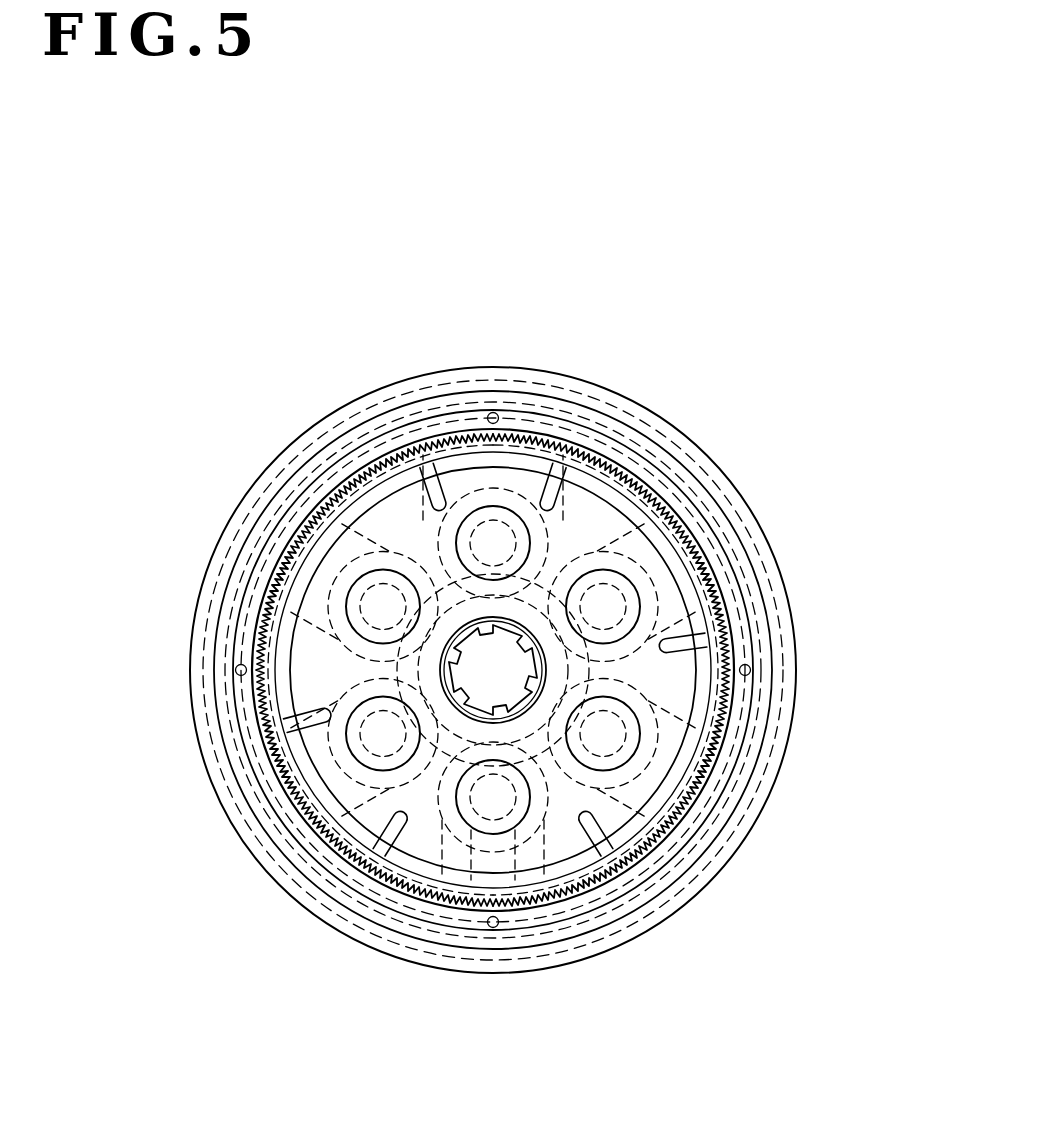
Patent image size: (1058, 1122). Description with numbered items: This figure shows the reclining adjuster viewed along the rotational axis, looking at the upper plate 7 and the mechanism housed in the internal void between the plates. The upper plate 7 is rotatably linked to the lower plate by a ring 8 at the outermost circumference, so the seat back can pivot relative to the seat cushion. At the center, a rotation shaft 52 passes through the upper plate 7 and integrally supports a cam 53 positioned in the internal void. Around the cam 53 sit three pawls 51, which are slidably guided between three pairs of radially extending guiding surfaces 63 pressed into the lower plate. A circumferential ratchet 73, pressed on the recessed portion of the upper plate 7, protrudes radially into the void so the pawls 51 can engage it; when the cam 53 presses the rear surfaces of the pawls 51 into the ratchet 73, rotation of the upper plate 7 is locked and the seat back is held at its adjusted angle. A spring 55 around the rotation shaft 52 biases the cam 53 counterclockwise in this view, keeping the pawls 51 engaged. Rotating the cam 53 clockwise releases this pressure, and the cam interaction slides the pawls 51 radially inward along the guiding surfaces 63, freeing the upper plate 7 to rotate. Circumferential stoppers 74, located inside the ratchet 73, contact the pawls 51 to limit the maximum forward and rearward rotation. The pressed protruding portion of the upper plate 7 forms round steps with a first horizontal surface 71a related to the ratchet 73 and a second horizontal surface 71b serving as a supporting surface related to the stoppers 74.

The upper plate 7 is at (535, 853).
The ring 8 is at (655, 500).
The pawl 51 is at (495, 500).
The rotation shaft 52 is at (478, 663).
The cam 53 is at (445, 713).
The spring 55 is at (600, 748).
The guiding surfaces 63 is at (465, 487).
The first horizontal surface 71a is at (350, 470).
The second horizontal surface 71b is at (605, 480).
The circumferential ratchet 73 is at (683, 520).
The circumferential stoppers 74 is at (470, 465).